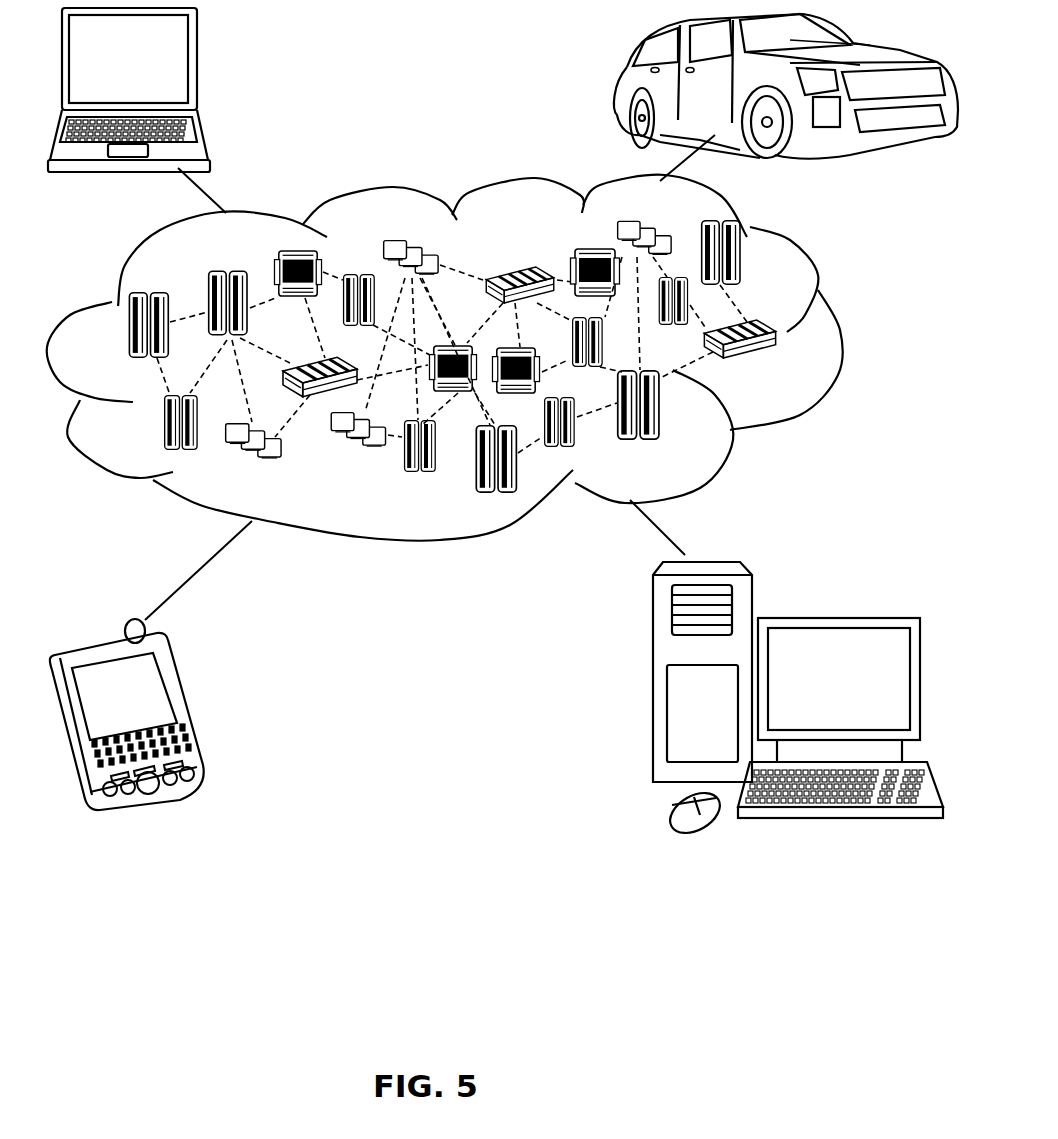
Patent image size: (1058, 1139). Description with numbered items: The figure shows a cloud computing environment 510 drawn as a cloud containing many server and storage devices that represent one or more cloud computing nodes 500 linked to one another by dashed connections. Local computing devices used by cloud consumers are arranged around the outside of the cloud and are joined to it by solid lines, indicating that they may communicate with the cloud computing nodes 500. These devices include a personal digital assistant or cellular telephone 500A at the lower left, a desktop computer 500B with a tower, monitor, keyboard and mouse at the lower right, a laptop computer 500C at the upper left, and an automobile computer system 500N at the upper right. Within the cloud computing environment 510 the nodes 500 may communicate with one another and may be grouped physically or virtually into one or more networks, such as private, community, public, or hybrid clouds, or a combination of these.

The cloud computing nodes 500 is at (810, 380).
The cloud computing environment 510 is at (838, 333).
The personal digital assistant (PDA) or cellular telephone 500A is at (188, 707).
The desktop computer 500B is at (837, 617).
The laptop computer 500C is at (197, 70).
The automobile computer system 500N is at (622, 85).